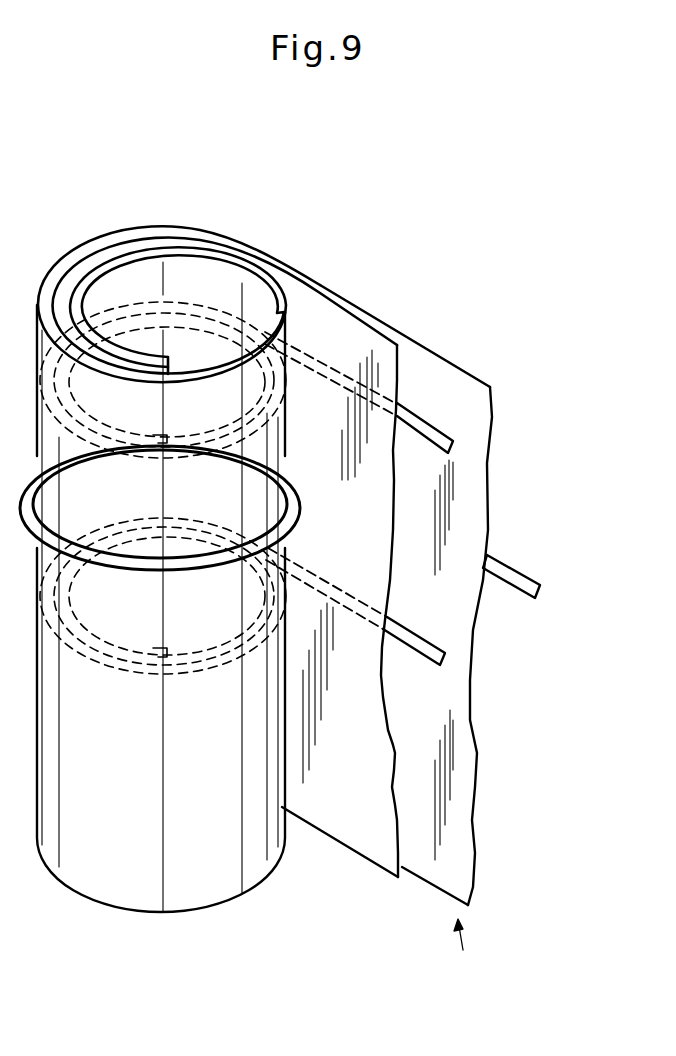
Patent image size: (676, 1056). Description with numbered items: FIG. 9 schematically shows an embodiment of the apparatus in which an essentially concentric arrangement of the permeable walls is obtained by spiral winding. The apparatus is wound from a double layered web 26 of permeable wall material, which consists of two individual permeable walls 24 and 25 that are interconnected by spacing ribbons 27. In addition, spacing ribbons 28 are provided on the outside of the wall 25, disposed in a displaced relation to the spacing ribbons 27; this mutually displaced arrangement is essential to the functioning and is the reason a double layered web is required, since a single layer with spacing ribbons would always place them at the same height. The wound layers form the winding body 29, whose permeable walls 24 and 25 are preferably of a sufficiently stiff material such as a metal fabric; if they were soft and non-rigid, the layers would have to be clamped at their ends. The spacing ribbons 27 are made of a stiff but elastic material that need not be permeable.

The permeable wall 24 is at (374, 870).
The permeable wall 25 is at (475, 826).
The double layered web 26 is at (471, 949).
The spacing ribbons 27 is at (437, 432).
The spacing ribbons 28 is at (508, 577).
The winding body 29 is at (218, 214).